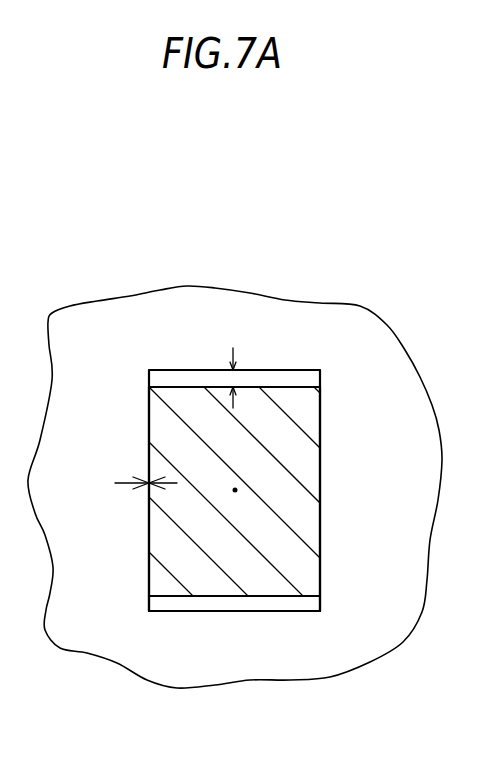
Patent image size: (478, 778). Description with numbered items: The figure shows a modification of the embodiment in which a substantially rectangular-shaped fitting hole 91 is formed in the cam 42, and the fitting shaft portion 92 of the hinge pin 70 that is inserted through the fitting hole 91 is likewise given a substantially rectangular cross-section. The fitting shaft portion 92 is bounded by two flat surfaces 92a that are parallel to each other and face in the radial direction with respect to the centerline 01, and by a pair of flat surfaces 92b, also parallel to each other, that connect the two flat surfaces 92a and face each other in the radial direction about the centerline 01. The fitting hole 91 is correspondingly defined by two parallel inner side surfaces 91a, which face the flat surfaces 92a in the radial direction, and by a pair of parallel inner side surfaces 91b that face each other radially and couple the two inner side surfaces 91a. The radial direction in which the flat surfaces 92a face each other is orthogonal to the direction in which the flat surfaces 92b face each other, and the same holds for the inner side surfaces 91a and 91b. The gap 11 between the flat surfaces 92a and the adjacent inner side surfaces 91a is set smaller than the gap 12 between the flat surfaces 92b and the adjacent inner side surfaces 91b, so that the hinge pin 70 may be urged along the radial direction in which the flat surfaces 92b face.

The cam 42 is at (120, 328).
The fitting hole 91 is at (310, 513).
The inner side surfaces 91a is at (153, 603).
The inner side surfaces 91b is at (182, 377).
The fitting shaft portion 92 is at (307, 462).
The hinge pin 70 is at (397, 447).
The flat surfaces 92a is at (149, 530).
The flat surfaces 92b is at (292, 387).
The gap 11 is at (120, 482).
The gap 12 is at (233, 350).
The centerline 01 is at (237, 489).